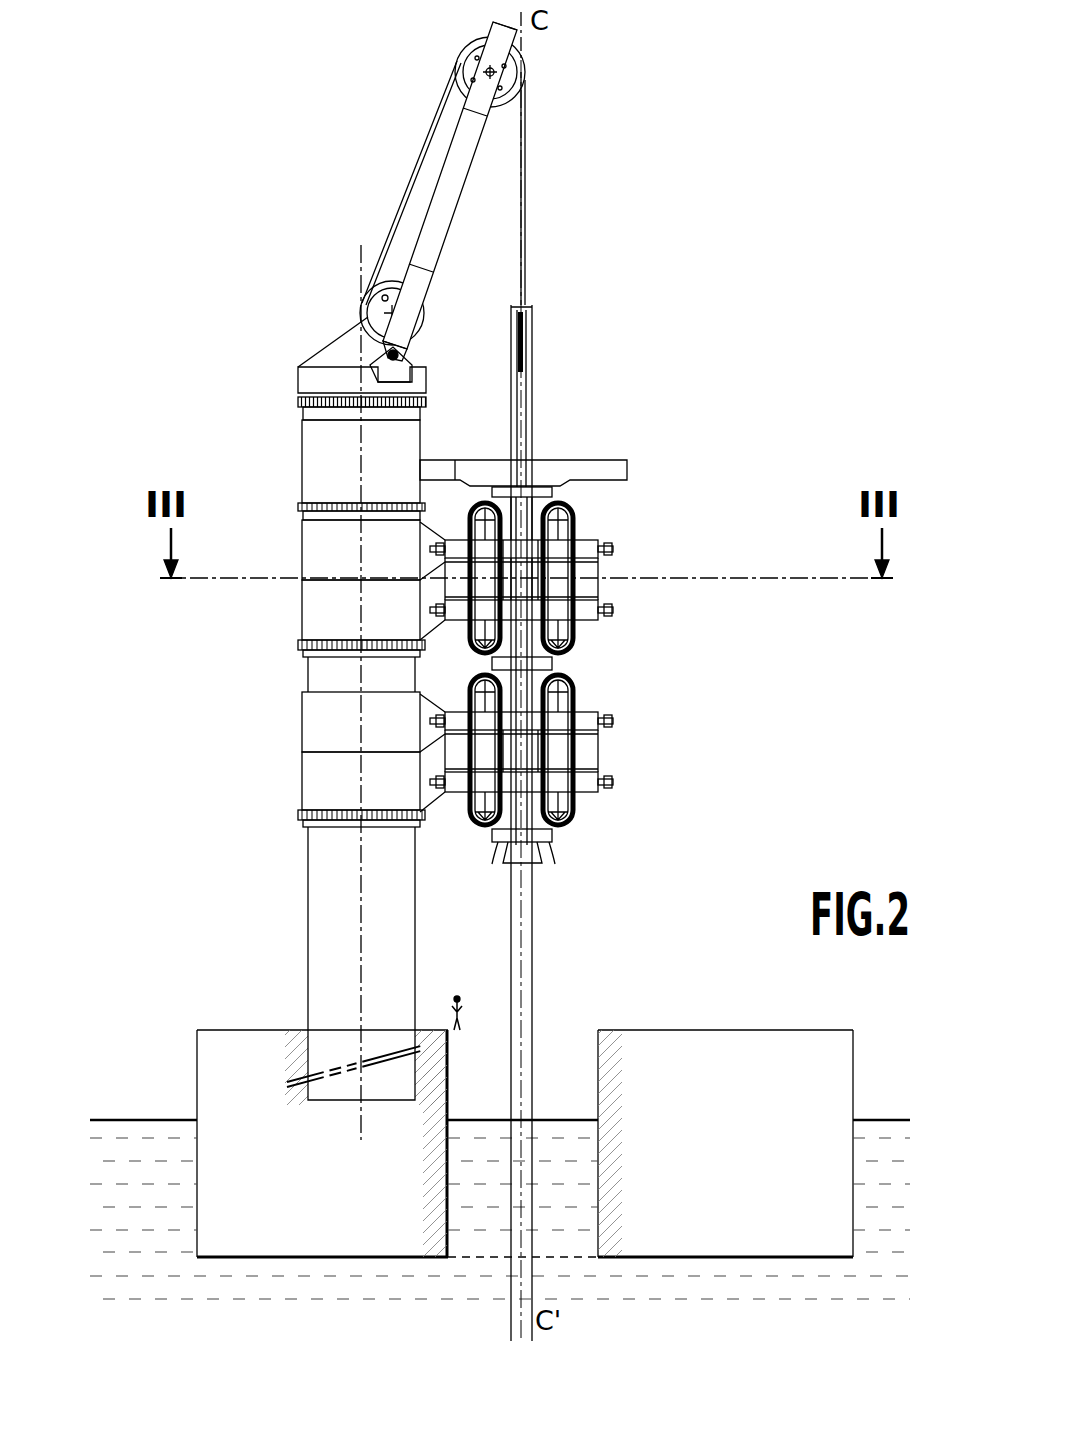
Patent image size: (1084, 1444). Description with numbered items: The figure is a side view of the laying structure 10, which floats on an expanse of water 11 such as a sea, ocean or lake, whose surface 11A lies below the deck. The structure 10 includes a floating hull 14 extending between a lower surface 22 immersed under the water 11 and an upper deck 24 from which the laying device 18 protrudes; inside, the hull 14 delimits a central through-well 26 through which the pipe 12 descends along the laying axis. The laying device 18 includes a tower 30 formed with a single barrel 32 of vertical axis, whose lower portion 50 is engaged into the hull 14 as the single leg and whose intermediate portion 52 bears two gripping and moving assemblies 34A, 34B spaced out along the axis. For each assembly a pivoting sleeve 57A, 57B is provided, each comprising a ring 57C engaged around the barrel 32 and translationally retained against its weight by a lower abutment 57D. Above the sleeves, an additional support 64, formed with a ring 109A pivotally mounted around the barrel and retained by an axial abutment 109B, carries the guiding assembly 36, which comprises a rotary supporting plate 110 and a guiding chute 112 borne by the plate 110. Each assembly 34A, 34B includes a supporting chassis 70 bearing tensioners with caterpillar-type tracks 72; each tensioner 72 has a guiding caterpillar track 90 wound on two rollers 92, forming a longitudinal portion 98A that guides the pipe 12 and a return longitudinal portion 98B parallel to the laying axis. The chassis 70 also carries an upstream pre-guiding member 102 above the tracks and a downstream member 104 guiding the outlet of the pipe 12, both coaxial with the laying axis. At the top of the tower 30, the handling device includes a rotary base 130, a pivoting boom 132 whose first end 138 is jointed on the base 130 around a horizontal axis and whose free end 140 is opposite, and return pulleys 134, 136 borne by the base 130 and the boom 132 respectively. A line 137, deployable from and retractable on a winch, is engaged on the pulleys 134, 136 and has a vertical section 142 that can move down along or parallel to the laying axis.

The laying structure 10 is at (205, 268).
The expanse of water 11 is at (152, 1215).
The surface of the expanse of water 11A is at (130, 1120).
The pipe 12 is at (543, 930).
The floating hull 14 is at (525, 1108).
The laying device 18 is at (616, 279).
The lower surface 22 is at (728, 1258).
The upper deck 24 is at (672, 1030).
The central through-well 26 is at (458, 1110).
The tower 30 is at (295, 723).
The single barrel 32 is at (343, 600).
The gripping and moving assembly 34A is at (697, 545).
The gripping and moving assembly 34B is at (697, 717).
The guiding assembly 36 is at (569, 433).
The lower portion of the barrel 50 is at (305, 1060).
The intermediate portion of the barrel 52 is at (328, 963).
The pivoting sleeve 57A is at (305, 620).
The pivoting sleeve 57B is at (305, 772).
The ring 57C is at (308, 548).
The lower abutment 57D is at (300, 645).
The additional support 64 is at (308, 425).
The supporting chassis 70 is at (623, 620).
The tensioner with caterpillar-type tracks 72 is at (583, 517).
The guiding caterpillar track 90 is at (573, 505).
The roller 92 is at (565, 528).
The longitudinal portion for guiding the pipe 98A is at (535, 580).
The return longitudinal portion 98B is at (580, 590).
The upstream pre-guiding member 102 is at (497, 488).
The downstream guiding member 104 is at (555, 665).
The ring 109A is at (412, 440).
The axial abutment 109B is at (325, 503).
The rotary supporting plate 110 is at (623, 470).
The guiding chute 112 is at (533, 328).
The rotary base 130 is at (305, 385).
The pivoting boom 132 is at (462, 145).
The return pulley 134 is at (368, 296).
The return pulley 136 is at (468, 62).
The line 137 is at (534, 140).
The first end of the boom 138 is at (398, 350).
The free end of the boom 140 is at (507, 40).
The vertical section of the line 142 is at (527, 220).